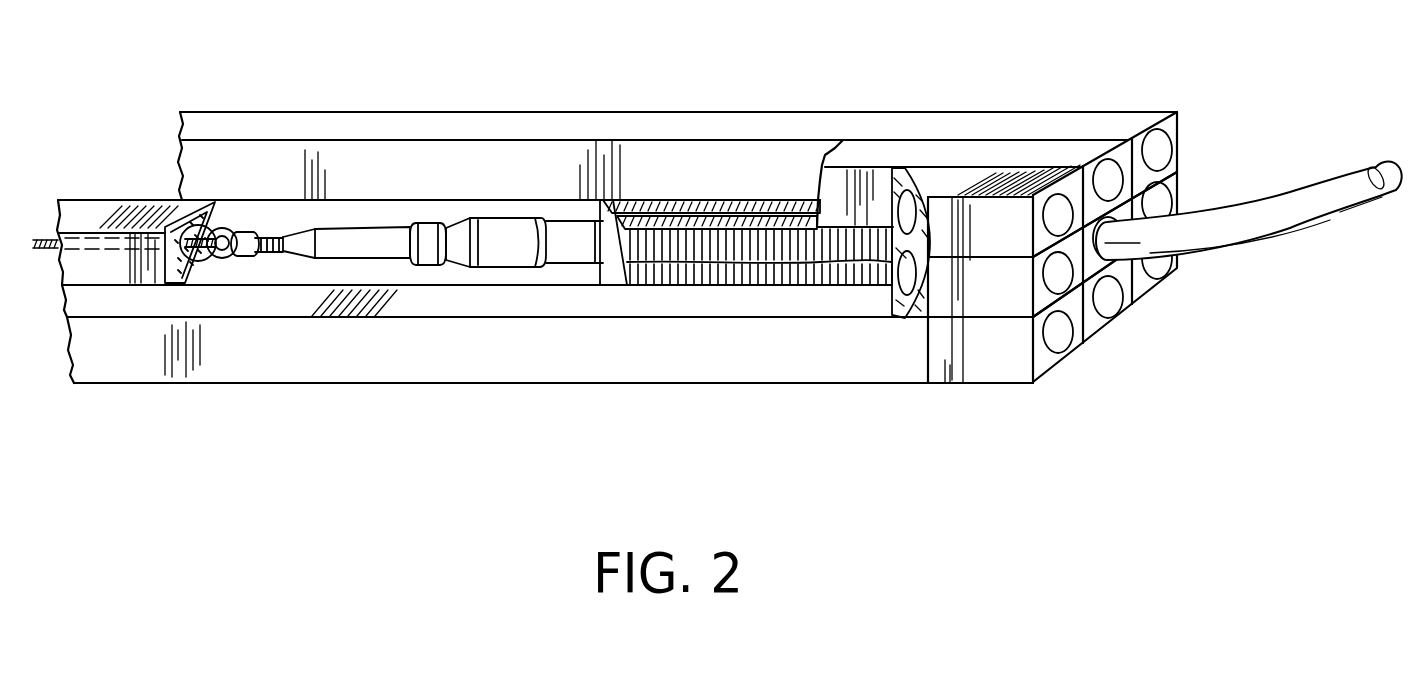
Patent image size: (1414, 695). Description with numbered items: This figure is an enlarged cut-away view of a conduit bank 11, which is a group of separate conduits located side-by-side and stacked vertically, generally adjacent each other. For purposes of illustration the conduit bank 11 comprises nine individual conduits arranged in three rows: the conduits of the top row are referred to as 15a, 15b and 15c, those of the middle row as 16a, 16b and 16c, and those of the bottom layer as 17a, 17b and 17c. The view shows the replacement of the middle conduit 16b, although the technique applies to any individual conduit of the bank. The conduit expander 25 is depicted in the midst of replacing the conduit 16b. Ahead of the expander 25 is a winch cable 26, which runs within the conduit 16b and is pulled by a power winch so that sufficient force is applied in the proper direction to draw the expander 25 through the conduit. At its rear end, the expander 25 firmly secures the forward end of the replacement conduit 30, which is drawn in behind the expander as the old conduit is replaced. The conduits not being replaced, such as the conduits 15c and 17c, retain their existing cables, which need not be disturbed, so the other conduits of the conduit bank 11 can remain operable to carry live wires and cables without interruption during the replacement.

The conduit bank 11 is at (976, 110).
The top row conduit 15a is at (1053, 183).
The top row conduit 15b is at (1107, 160).
The top row conduit 15c is at (1183, 120).
The middle row conduit 16a is at (1028, 290).
The middle conduit 16b is at (113, 198).
The middle row conduit 16c is at (1182, 197).
The bottom layer conduit 17a is at (165, 372).
The bottom layer conduit 17b is at (1120, 317).
The bottom layer conduit 17c is at (1162, 280).
The conduit expander 25 is at (410, 193).
The winch cable 26 is at (56, 238).
The replacement conduit 30 is at (1347, 203).